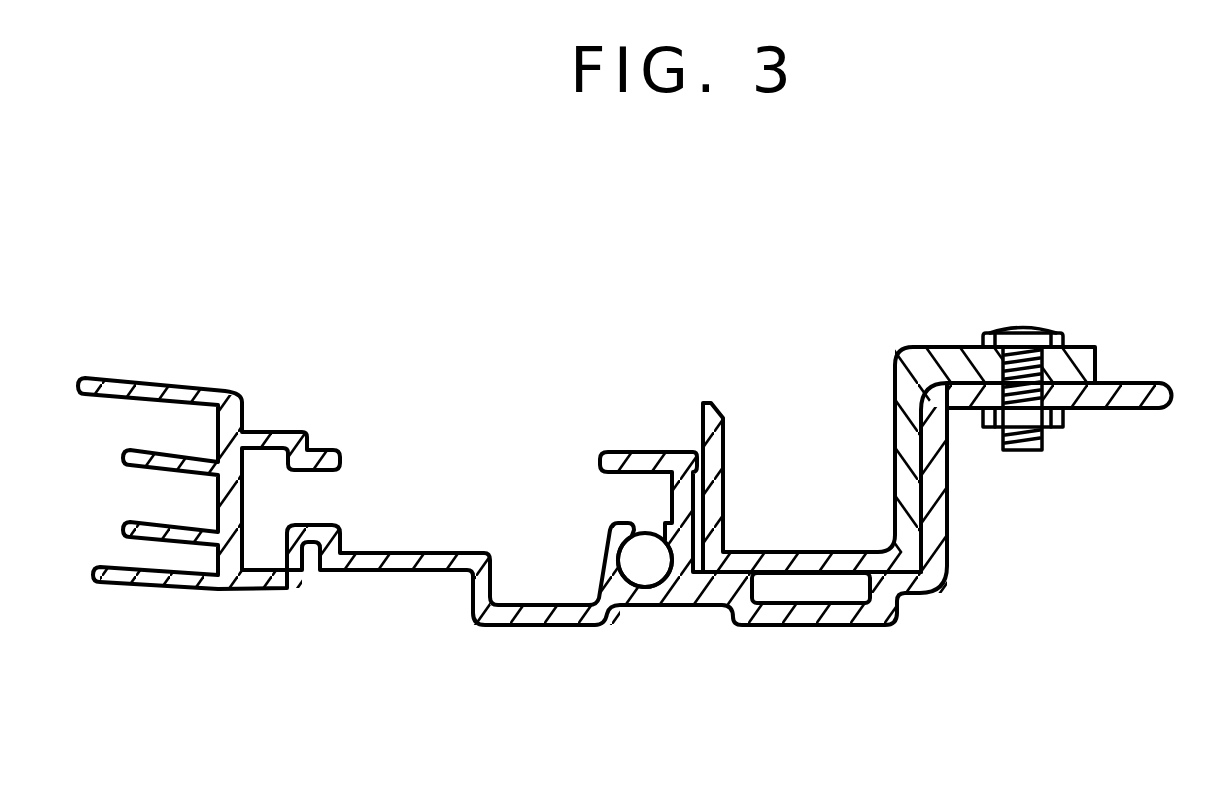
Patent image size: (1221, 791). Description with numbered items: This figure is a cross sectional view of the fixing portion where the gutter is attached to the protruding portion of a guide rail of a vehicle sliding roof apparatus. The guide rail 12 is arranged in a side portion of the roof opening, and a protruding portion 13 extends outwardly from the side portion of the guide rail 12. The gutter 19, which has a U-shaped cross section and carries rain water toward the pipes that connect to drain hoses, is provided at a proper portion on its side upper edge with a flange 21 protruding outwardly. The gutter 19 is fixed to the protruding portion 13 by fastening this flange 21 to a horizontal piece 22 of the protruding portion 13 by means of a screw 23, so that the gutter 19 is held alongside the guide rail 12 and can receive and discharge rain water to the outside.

The guide rail 12 is at (542, 625).
The protruding portion 13 is at (832, 628).
The gutter 19 is at (709, 400).
The flange 21 is at (1097, 358).
The horizontal piece 22 is at (1147, 410).
The screw 23 is at (1055, 330).